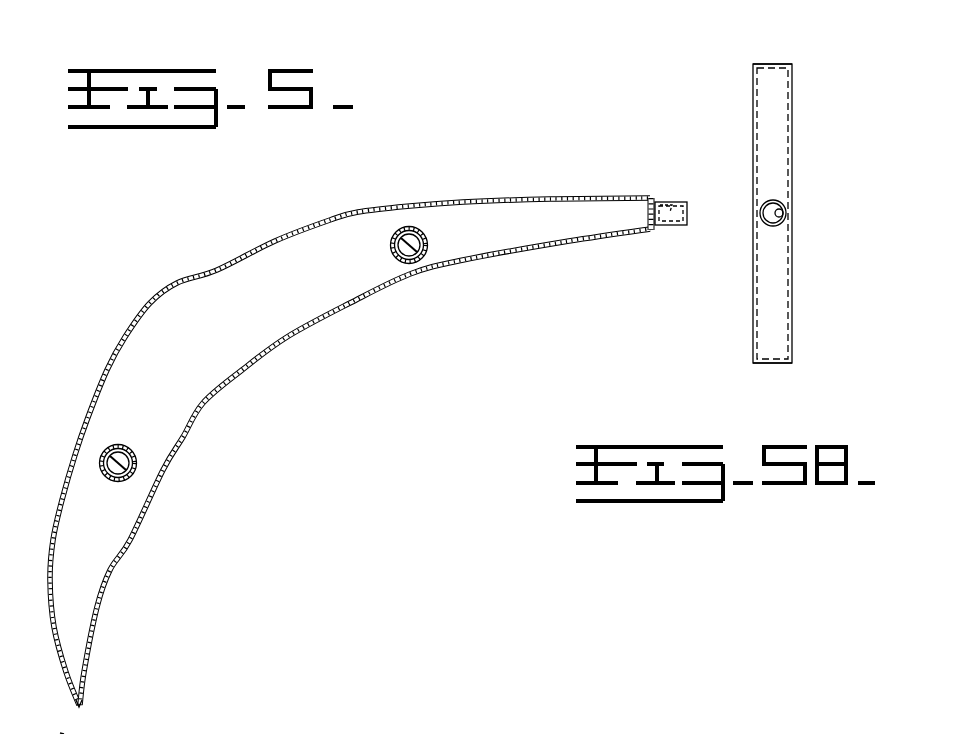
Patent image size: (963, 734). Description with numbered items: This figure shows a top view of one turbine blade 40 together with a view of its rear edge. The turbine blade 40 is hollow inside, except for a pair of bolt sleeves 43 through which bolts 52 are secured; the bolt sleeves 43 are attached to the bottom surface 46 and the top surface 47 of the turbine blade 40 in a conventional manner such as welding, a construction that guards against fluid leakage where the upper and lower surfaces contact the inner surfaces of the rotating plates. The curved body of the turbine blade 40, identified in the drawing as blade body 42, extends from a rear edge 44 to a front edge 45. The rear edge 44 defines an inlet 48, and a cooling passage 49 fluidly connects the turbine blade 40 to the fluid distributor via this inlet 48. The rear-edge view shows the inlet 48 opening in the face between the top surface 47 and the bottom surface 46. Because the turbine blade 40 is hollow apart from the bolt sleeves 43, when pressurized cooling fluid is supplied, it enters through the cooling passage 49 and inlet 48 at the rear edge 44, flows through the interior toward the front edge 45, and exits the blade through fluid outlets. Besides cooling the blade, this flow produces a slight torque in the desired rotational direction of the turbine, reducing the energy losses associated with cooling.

In FIG. 5, the turbine blade 40 is at (375, 444).
In FIG. 5B, the turbine blade 40 is at (762, 217).
In FIG. 5, the blade body 42 is at (203, 322).
In FIG. 5, the bolt sleeve 43 is at (425, 258).
In FIG. 5, the rear edge 44 is at (660, 230).
In FIG. 5B, the rear edge 44 is at (767, 137).
In FIG. 5, the front edge 45 is at (83, 707).
In FIG. 5B, the bottom surface 46 is at (778, 363).
In FIG. 5, the top surface 47 is at (62, 733).
In FIG. 5B, the top surface 47 is at (762, 64).
In FIG. 5, the inlet 48 is at (668, 208).
In FIG. 5B, the inlet 48 is at (780, 216).
In FIG. 5, the cooling passage 49 is at (683, 228).
In FIG. 5, the bolt 52 is at (107, 455).